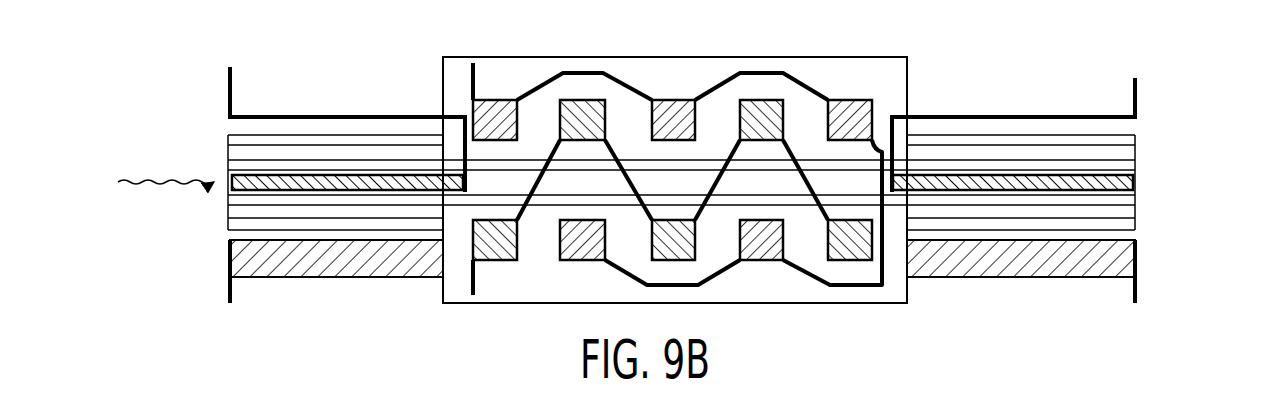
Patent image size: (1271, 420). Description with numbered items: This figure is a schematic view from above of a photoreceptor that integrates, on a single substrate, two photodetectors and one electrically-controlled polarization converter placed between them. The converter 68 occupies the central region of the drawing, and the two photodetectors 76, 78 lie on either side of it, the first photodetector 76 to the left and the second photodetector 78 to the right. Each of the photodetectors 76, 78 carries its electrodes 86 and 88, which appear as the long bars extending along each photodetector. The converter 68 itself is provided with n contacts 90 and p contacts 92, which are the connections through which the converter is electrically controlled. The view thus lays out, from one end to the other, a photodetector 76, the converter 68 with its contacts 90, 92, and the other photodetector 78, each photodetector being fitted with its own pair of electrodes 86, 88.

The electrically-controlled polarization converter 68 is at (700, 52).
The photodetector 76 is at (338, 103).
The photodetector 78 is at (1012, 100).
The electrode 86 is at (225, 190).
The electrode 88 is at (225, 263).
The contact n 90 is at (475, 84).
The contact p 92 is at (480, 275).